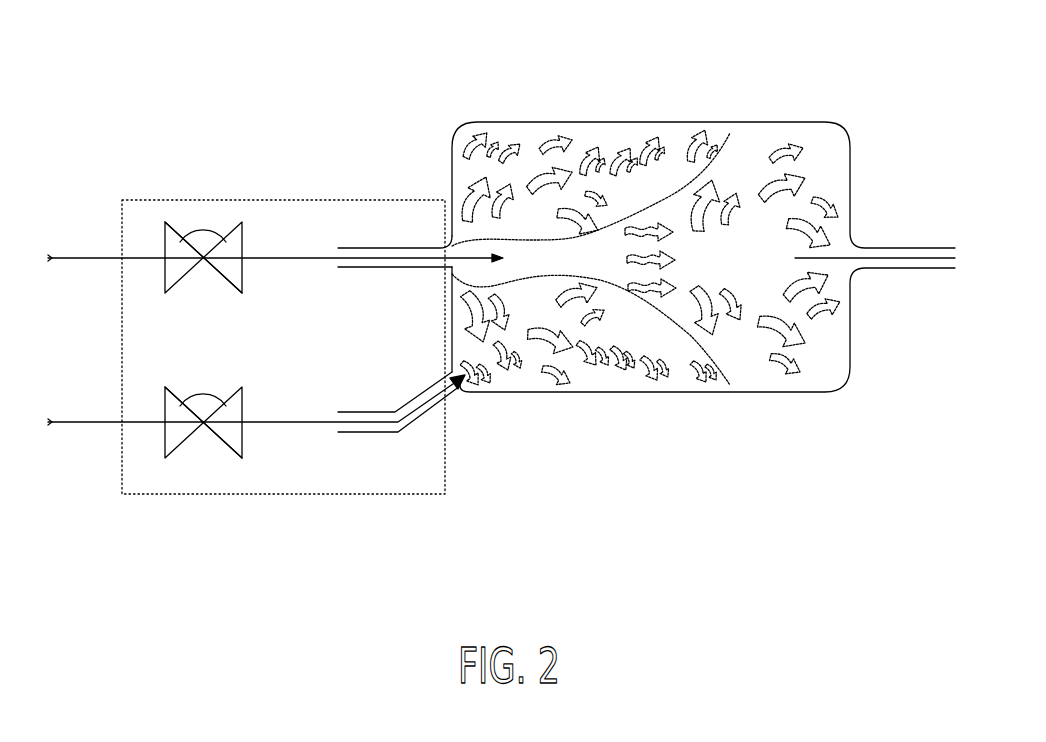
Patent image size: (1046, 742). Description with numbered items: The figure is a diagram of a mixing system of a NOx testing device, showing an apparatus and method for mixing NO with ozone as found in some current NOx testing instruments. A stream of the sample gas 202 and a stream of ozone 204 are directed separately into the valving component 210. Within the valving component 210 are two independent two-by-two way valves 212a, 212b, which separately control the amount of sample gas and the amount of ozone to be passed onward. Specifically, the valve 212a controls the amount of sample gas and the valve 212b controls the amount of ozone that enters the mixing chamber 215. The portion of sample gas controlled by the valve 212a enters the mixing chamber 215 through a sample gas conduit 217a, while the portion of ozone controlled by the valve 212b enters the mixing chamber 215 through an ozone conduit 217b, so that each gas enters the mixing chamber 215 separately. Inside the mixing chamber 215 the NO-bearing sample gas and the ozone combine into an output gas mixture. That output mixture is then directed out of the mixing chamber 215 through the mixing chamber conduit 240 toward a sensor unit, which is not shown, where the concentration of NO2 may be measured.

The sample gas 202 is at (97, 258).
The ozone 204 is at (97, 422).
The valving component 210 is at (353, 200).
The 2/2 way valve 212a is at (242, 223).
The 2/2 way valve 212b is at (242, 400).
The mixing chamber 215 is at (655, 122).
The sample gas conduit 217a is at (408, 270).
The ozone conduit 217b is at (390, 437).
The mixing chamber conduit 240 is at (885, 248).